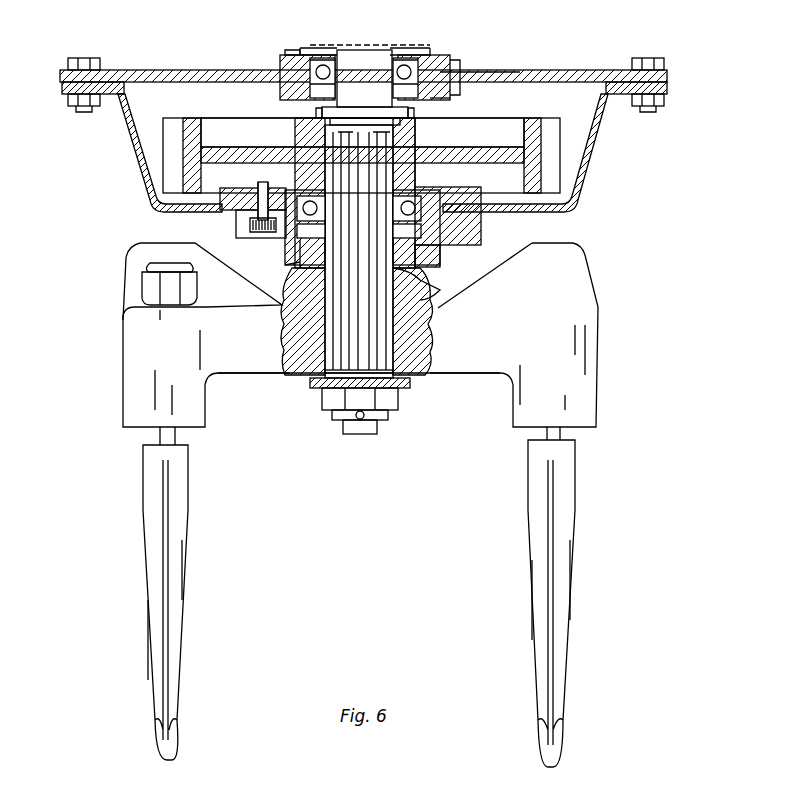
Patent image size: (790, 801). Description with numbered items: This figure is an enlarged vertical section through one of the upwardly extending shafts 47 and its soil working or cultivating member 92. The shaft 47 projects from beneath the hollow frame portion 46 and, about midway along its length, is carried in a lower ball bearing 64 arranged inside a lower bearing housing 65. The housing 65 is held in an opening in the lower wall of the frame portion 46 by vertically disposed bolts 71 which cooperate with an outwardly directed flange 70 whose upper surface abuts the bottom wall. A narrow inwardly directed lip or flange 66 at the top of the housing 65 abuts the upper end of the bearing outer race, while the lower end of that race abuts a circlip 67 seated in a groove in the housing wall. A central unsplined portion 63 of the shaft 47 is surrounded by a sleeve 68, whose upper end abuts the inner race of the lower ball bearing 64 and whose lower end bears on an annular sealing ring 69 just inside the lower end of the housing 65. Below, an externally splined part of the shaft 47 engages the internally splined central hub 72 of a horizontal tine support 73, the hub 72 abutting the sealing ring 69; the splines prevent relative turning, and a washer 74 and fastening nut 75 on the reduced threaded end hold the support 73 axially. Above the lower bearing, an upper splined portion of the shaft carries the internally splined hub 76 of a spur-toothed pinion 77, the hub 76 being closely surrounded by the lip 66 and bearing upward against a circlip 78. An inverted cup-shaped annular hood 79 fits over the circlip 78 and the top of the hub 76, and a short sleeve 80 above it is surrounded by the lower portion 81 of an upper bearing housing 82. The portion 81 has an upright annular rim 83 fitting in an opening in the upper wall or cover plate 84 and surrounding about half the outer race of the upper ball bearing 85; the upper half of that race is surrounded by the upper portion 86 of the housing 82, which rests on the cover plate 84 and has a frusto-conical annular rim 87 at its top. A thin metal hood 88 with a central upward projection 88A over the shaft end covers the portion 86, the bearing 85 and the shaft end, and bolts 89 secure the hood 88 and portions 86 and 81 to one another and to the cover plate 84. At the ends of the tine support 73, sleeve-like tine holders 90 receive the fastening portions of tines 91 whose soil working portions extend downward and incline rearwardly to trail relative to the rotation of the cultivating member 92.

The hollow frame portion 46 is at (116, 141).
The shaft 47 is at (371, 66).
The central unsplined portion 63 is at (366, 236).
The lower ball bearing 64 is at (443, 250).
The lower bearing housing 65 is at (289, 270).
The lip or flange 66 is at (420, 192).
The circlip 67 is at (282, 248).
The sleeve 68 is at (410, 272).
The annular sealing ring 69 is at (292, 316).
The outwardly directed flange 70 is at (478, 226).
The bolt 71 is at (256, 190).
The central hub 72 is at (430, 312).
The tine support 73 is at (257, 384).
The washer 74 is at (322, 390).
The fastening nut 75 is at (395, 400).
The hub of pinion 76 is at (430, 147).
The pinion 77 is at (198, 104).
The circlip 78 is at (318, 116).
The annular hood 79 is at (316, 110).
The sleeve 80 is at (410, 110).
The lower portion of upper bearing housing 81 is at (448, 90).
The upper bearing housing 82 is at (466, 56).
The annular rim 83 is at (458, 72).
The upper wall or cover plate 84 is at (138, 70).
The upper ball bearing 85 is at (428, 55).
The upper portion of upper bearing housing 86 is at (285, 62).
The annular rim 87 is at (325, 55).
The metal hood 88 is at (305, 48).
The upward projection 88A is at (355, 45).
The bolt 89 is at (292, 50).
The tine holder 90 is at (128, 335).
The tine 91 is at (180, 570).
The soil working or cultivating member 92 is at (366, 589).